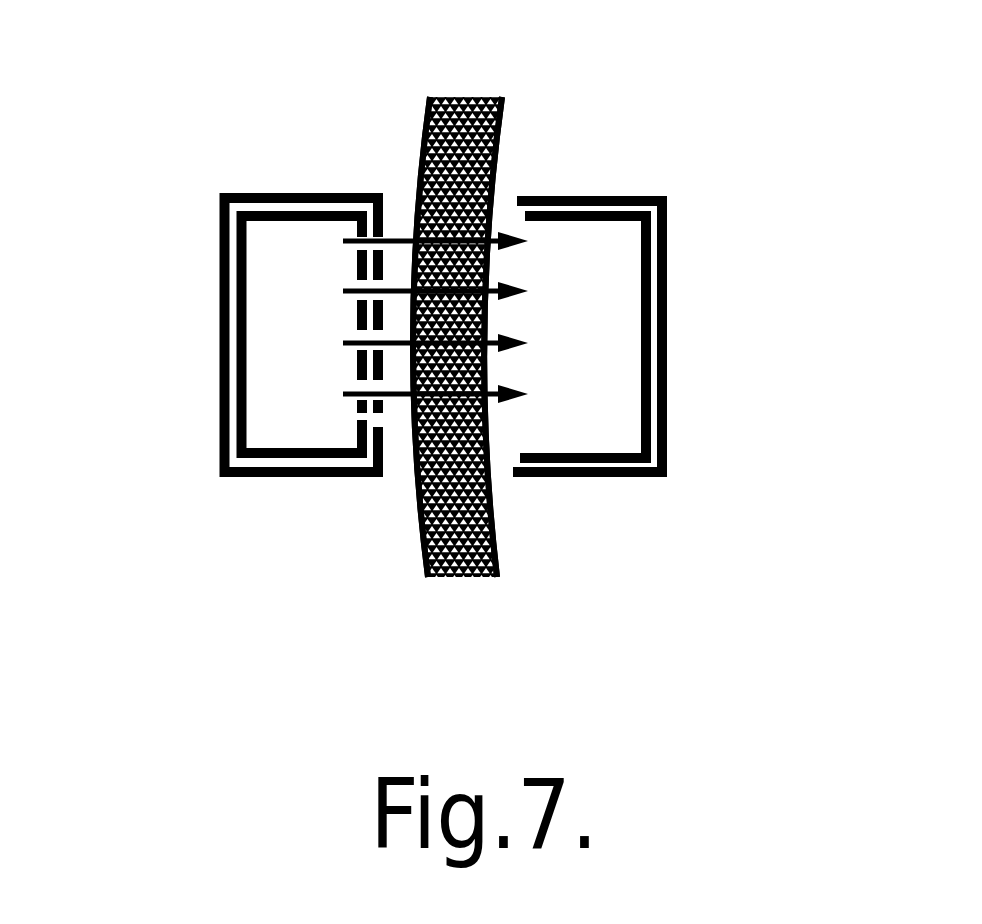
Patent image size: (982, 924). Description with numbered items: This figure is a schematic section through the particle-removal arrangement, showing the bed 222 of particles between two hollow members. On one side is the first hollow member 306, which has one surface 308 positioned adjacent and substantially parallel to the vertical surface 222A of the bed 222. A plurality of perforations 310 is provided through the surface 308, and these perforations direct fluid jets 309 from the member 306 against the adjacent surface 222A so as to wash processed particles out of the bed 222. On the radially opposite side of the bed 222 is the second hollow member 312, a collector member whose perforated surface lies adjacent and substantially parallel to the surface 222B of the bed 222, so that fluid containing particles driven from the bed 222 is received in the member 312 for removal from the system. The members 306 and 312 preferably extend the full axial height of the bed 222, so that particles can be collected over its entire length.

The bed 222 is at (472, 100).
The surface 222A is at (420, 522).
The surface 222B is at (495, 533).
The first hollow member 306 is at (220, 295).
The surface 308 is at (385, 234).
The fluid jets 309 is at (527, 242).
The perforations 310 is at (367, 297).
The second hollow member 312 is at (667, 258).